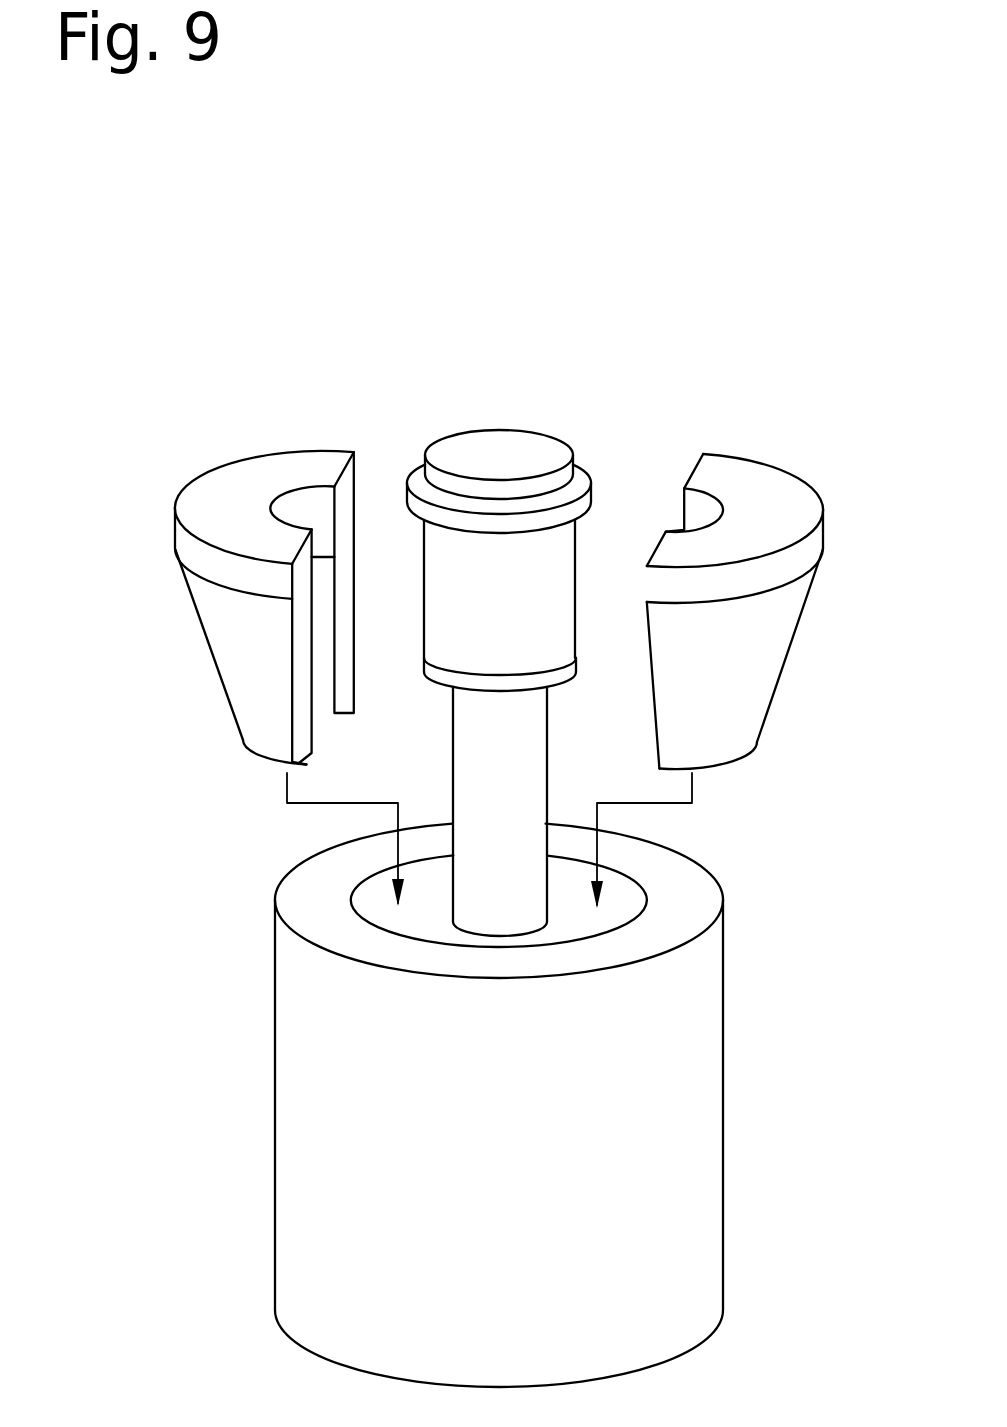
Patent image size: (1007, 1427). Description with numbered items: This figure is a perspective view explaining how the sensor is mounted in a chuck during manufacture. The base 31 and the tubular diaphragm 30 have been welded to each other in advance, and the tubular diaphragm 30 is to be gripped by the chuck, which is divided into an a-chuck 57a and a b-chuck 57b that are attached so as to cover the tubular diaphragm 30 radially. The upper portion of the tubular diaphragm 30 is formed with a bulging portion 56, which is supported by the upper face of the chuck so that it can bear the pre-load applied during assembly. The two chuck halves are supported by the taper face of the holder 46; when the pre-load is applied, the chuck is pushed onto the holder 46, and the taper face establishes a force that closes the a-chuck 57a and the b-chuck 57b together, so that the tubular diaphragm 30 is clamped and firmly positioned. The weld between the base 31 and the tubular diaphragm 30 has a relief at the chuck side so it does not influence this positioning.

The bulging portion 56 is at (590, 483).
The tubular diaphragm 30 is at (550, 567).
The base 31 is at (527, 752).
The a-chuck 57a is at (712, 705).
The b-chuck 57b is at (275, 692).
The holder 46 is at (613, 1072).